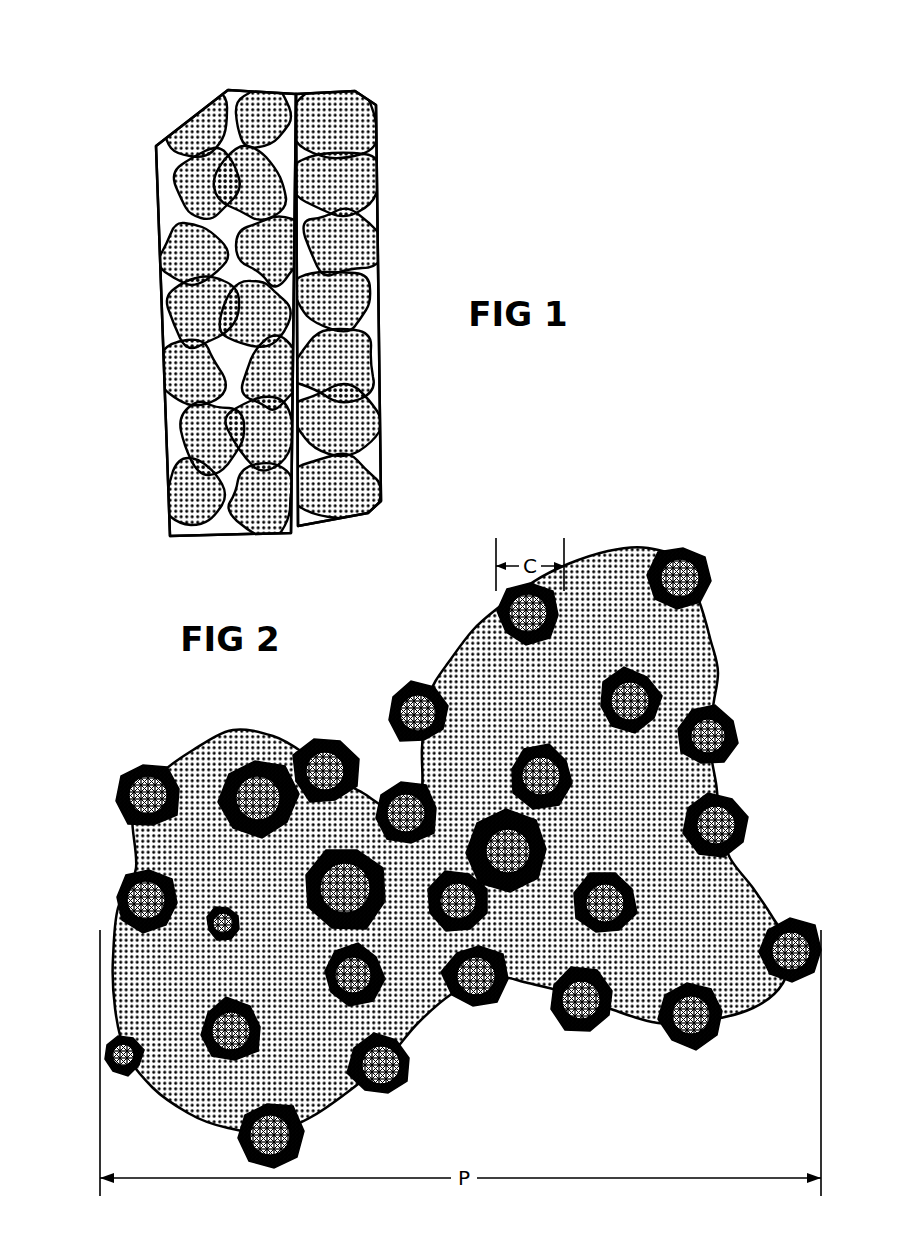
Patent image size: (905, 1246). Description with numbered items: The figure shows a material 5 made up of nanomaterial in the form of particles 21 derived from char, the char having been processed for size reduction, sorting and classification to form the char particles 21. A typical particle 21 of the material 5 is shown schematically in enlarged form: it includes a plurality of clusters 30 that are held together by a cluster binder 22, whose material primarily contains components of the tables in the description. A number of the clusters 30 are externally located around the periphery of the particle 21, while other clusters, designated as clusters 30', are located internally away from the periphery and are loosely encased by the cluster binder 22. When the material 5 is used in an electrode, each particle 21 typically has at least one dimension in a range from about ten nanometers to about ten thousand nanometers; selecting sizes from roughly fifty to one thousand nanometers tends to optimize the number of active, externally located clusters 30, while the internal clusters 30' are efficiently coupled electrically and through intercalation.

In FIG. 1, the material 5 is at (128, 158).
In FIG. 1, the particle 21 is at (375, 268).
In FIG. 2, the particle 21 is at (492, 1038).
In FIG. 2, the cluster binder 22 is at (588, 595).
In FIG. 2, the clusters 30 is at (454, 858).
In FIG. 2, the internally located clusters 30' is at (471, 863).